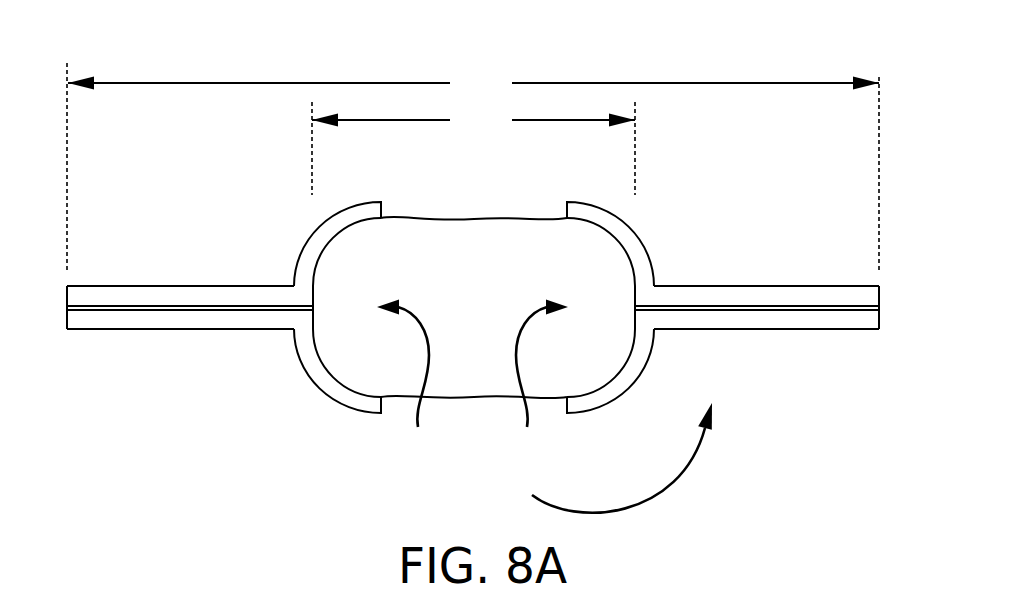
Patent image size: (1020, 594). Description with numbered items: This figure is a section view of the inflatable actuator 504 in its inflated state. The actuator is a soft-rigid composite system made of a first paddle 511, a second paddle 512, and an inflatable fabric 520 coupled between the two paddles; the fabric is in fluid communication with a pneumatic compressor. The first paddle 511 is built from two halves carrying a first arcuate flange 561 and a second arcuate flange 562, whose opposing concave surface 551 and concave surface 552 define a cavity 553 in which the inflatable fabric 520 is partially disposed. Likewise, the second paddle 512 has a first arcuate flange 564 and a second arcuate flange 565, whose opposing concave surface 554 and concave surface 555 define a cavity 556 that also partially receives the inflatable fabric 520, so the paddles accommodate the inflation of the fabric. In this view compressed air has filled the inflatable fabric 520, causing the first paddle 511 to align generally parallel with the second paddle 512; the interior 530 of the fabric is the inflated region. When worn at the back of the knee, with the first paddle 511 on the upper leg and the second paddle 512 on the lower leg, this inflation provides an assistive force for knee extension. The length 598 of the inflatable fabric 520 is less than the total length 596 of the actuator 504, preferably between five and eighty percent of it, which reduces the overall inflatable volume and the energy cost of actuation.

The inflatable actuator 504 is at (247, 63).
The first paddle 511 is at (153, 287).
The second paddle 512 is at (833, 287).
The inflatable fabric 520 is at (483, 215).
The chamber cavity 530 is at (497, 307).
The concave surface 551 is at (340, 235).
The concave surface 552 is at (335, 375).
The cavity 553 is at (418, 379).
The concave surface 554 is at (605, 233).
The concave surface 555 is at (608, 372).
The cavity 556 is at (526, 379).
The first arcuate flange 561 is at (315, 240).
The second arcuate flange 562 is at (312, 362).
The first arcuate flange 564 is at (638, 247).
The second arcuate flange 565 is at (640, 355).
The total length 596 is at (473, 166).
The length 598 is at (473, 148).